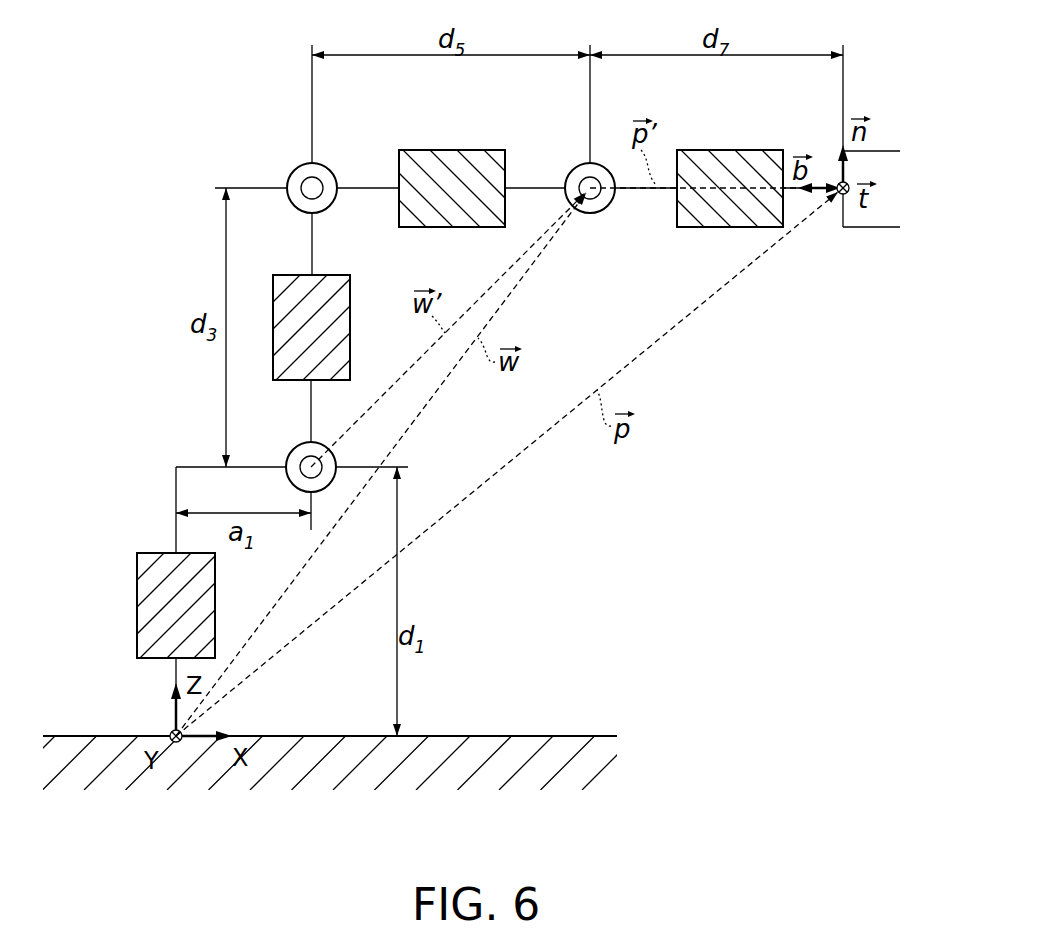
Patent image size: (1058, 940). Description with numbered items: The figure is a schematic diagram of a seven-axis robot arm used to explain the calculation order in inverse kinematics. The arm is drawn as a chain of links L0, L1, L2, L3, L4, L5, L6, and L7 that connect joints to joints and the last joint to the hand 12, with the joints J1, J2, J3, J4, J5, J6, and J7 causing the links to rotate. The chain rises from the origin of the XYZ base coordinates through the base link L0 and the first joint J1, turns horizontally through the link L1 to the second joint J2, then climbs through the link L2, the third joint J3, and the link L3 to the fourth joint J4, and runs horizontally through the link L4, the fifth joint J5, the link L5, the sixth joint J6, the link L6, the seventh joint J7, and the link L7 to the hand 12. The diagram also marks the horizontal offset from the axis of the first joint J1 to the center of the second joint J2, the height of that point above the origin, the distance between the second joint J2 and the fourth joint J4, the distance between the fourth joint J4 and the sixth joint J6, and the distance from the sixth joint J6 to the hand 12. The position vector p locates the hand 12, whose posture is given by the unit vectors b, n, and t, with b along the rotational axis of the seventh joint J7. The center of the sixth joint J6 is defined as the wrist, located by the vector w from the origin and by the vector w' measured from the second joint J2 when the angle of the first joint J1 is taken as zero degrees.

The hand 12 is at (878, 228).
The first joint J1 is at (143, 605).
The second joint J2 is at (314, 452).
The third joint J3 is at (342, 325).
The fourth joint J4 is at (291, 172).
The fifth joint J5 is at (455, 218).
The sixth joint J6 is at (594, 212).
The seventh joint J7 is at (705, 218).
The link L0 is at (176, 672).
The link L1 is at (176, 482).
The link L2 is at (311, 412).
The link L3 is at (311, 245).
The link L4 is at (368, 190).
The link L5 is at (530, 190).
The link L6 is at (646, 190).
The link L7 is at (791, 190).